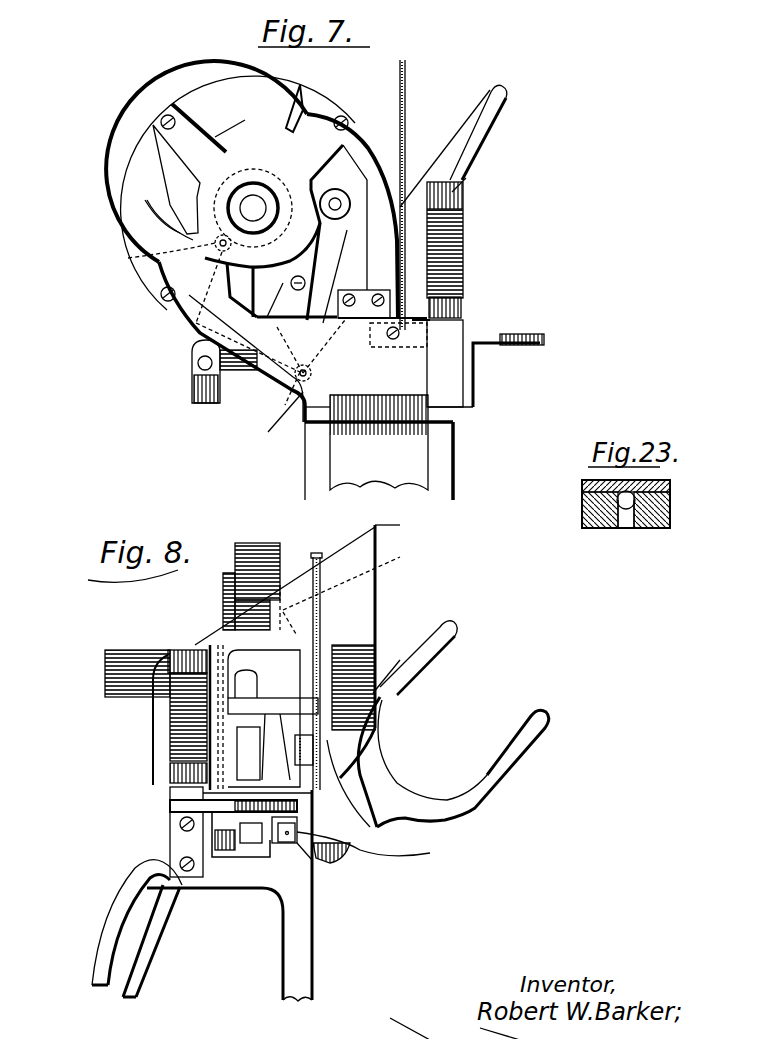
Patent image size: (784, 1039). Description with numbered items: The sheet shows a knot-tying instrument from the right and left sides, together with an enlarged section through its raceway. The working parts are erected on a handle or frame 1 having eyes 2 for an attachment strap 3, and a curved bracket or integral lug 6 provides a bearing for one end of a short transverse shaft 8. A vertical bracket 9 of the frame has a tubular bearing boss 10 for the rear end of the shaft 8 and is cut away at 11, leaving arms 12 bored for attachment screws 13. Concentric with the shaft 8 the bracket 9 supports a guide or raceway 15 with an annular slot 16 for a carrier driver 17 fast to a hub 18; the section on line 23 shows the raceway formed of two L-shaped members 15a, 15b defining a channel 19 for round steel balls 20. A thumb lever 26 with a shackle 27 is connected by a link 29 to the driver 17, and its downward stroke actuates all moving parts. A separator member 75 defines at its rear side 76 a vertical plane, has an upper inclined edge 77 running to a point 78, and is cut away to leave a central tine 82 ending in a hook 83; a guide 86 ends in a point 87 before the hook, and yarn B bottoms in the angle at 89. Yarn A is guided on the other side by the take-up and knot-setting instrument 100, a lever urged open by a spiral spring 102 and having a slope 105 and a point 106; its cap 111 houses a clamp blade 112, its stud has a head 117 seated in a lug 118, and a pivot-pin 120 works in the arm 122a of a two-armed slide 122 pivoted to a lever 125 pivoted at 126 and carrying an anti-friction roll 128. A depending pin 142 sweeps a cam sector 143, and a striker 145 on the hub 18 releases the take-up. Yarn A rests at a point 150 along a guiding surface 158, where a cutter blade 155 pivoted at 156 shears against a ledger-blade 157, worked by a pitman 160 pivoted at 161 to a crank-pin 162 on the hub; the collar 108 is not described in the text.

In FIG. 7, the handle or frame 1 is at (302, 471).
In FIG. 8, the handle or frame 1 is at (315, 962).
In FIG. 7, the eyes 2 is at (452, 422).
In FIG. 8, the eyes 2 is at (155, 882).
In FIG. 7, the attachment strap 3 is at (379, 442).
In FIG. 8, the attachment strap 3 is at (105, 920).
In FIG. 8, the curved bracket or integral lug 6 is at (372, 790).
In FIG. 7, the short transverse shaft 8 is at (250, 207).
In FIG. 7, the vertical bracket 9 is at (178, 330).
In FIG. 7, the bearing boss 10 is at (252, 183).
In FIG. 8, the bearing boss 10 is at (105, 659).
In FIG. 7, the cut-away portions 11 is at (168, 168).
In FIG. 7, the arms 12 is at (178, 140).
In FIG. 8, the arms 12 is at (220, 608).
In FIG. 7, the attachment screws 13 is at (165, 116).
In FIG. 7, the guide or raceway 15 is at (120, 197).
In FIG. 23, the guide or raceway 15 is at (562, 480).
In FIG. 8, the guide or raceway 15 is at (258, 541).
In FIG. 23, the L-shaped member 15a is at (672, 481).
In FIG. 23, the L-shaped member 15b is at (595, 528).
In FIG. 23, the annular slot 16 is at (626, 528).
In FIG. 7, the carrier driver 17 is at (150, 232).
In FIG. 7, the hub 18 is at (285, 175).
In FIG. 23, the channel 19 is at (655, 510).
In FIG. 23, the round steel balls 20 is at (618, 502).
In FIG. 7, the section line 23 is at (238, 95).
In FIG. 8, the thumb lever 26 is at (520, 780).
In FIG. 7, the shackle 27 is at (190, 381).
In FIG. 7, the link 29 is at (190, 348).
In FIG. 7, the separator member 75 is at (408, 72).
In FIG. 8, the separator member 75 is at (365, 600).
In FIG. 7, the rear side of separator member 76 is at (410, 250).
In FIG. 8, the rear side of separator member 76 is at (150, 733).
In FIG. 7, the upper inclined edge 77 is at (406, 131).
In FIG. 8, the upper inclined edge 77 is at (200, 645).
In FIG. 7, the point 78 is at (402, 60).
In FIG. 8, the point 78 is at (397, 622).
In FIG. 8, the central tine 82 is at (268, 688).
In FIG. 8, the hook 83 is at (270, 773).
In FIG. 8, the guide 86 is at (346, 590).
In FIG. 8, the point of guide 87 is at (305, 795).
In FIG. 7, the angle of guide 89 is at (465, 303).
In FIG. 7, the yarn take-up and knot-setting instrument 100 is at (466, 150).
In FIG. 8, the yarn take-up and knot-setting instrument 100 is at (323, 637).
In FIG. 7, the spiral spring 102 is at (466, 258).
In FIG. 8, the spiral spring 102 is at (168, 712).
In FIG. 7, the slope 105 is at (466, 197).
In FIG. 7, the point 106 is at (500, 95).
In FIG. 8, the point 106 is at (316, 556).
In FIG. 8, the collar 108 is at (190, 740).
In FIG. 8, the cap 111 is at (362, 733).
In FIG. 8, the clamp blade 112 is at (322, 773).
In FIG. 7, the head 117 is at (463, 182).
In FIG. 8, the head 117 is at (175, 647).
In FIG. 7, the lug 118 is at (458, 378).
In FIG. 8, the lug 118 is at (168, 805).
In FIG. 8, the pivot-pin 120 is at (234, 850).
In FIG. 8, the two-armed slide 122 is at (345, 855).
In FIG. 8, the arm of slide 122a is at (257, 843).
In FIG. 7, the lever 125 is at (470, 222).
In FIG. 7, the pivot 126 is at (466, 275).
In FIG. 7, the anti-friction roll 128 is at (340, 183).
In FIG. 8, the depending pin 142 is at (380, 848).
In FIG. 7, the cam sector 143 is at (522, 334).
In FIG. 8, the cam sector 143 is at (315, 872).
In FIG. 7, the striker 145 is at (293, 125).
In FIG. 7, the point of rest 150 is at (275, 418).
In FIG. 7, the cutter blade 155 is at (372, 328).
In FIG. 8, the cutter blade 155 is at (168, 790).
In FIG. 7, the pivot 156 is at (340, 326).
In FIG. 7, the ledger-blade 157 is at (405, 350).
In FIG. 7, the guiding surface 158 is at (470, 323).
In FIG. 7, the pitman 160 is at (197, 343).
In FIG. 7, the pivot 161 is at (248, 335).
In FIG. 7, the crank-pin 162 is at (153, 253).
In FIG. 7, the yarn A is at (423, 105).
In FIG. 7, the yarn B is at (382, 100).